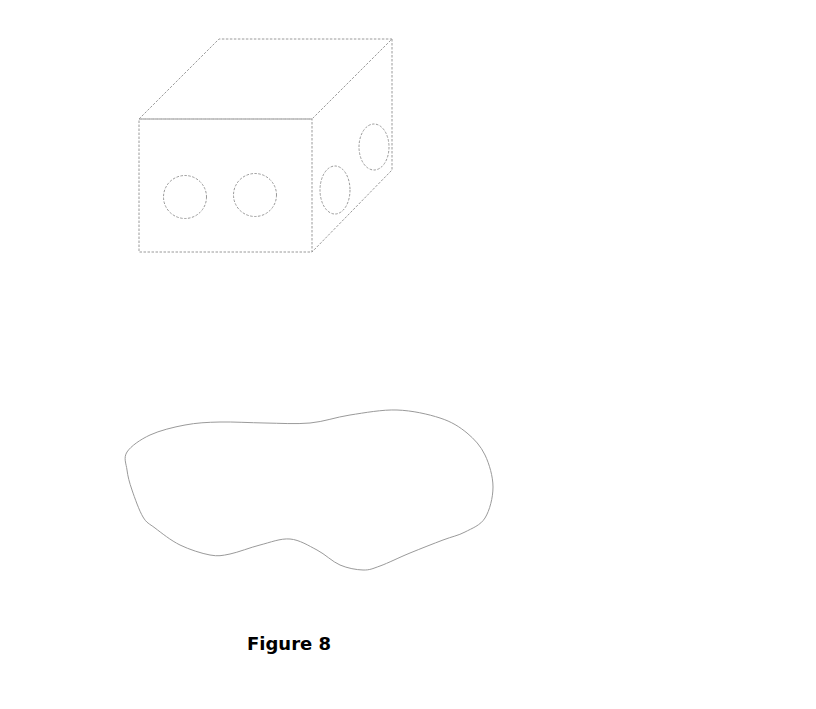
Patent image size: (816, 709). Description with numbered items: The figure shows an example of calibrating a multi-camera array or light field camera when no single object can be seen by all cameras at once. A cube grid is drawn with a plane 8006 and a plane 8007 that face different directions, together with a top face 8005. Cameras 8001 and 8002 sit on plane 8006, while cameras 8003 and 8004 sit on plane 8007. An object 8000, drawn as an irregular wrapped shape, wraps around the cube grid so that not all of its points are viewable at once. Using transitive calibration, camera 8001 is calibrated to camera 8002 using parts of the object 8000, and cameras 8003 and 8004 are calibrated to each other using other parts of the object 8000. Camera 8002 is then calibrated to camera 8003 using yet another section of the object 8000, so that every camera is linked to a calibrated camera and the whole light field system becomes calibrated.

The object 8000 is at (309, 490).
The camera 8001 is at (180, 200).
The camera 8002 is at (257, 208).
The camera 8003 is at (335, 196).
The camera 8004 is at (375, 143).
The top surface 8005 is at (238, 69).
The plane 8006 is at (165, 150).
The plane 8007 is at (367, 91).